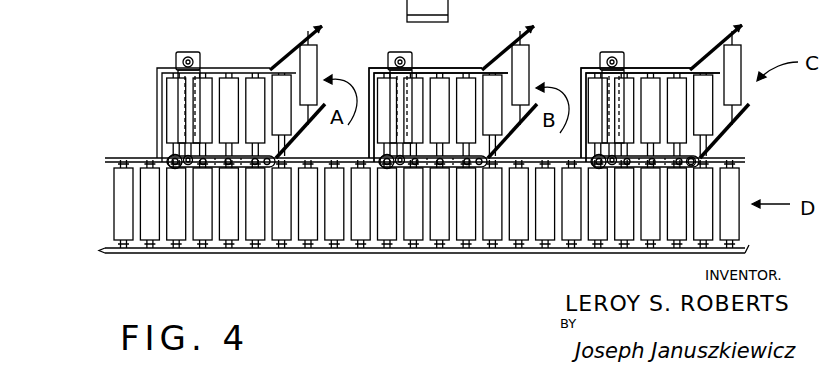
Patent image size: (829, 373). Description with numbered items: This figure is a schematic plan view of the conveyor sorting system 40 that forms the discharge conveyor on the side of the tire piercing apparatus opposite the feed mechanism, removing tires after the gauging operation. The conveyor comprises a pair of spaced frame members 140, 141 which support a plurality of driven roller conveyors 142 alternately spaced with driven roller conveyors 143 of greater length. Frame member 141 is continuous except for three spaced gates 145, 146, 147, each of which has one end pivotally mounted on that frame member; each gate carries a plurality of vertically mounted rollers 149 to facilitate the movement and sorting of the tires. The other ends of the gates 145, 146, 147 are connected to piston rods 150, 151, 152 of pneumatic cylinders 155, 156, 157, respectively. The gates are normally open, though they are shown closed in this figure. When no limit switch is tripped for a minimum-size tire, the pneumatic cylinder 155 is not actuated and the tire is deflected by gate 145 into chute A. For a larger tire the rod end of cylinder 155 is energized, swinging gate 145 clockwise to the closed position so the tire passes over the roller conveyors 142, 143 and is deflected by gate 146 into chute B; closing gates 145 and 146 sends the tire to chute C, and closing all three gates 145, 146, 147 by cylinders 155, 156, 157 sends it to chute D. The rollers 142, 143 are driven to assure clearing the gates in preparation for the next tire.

The machine 40 is at (80, 3).
The frame member 140 is at (133, 252).
The frame member 141 is at (113, 163).
The driven roller conveyors 142 is at (148, 203).
The driven roller conveyors of greater length 143 is at (176, 228).
The gate 145 is at (170, 159).
The gate 146 is at (428, 163).
The gate 147 is at (693, 156).
The vertically mounted rollers 149 is at (235, 156).
The piston rod 150 is at (184, 145).
The piston rod 151 is at (380, 148).
The piston rod 152 is at (590, 148).
The pneumatic cylinder 155 is at (181, 68).
The pneumatic cylinder 156 is at (392, 68).
The pneumatic cylinder 157 is at (603, 70).